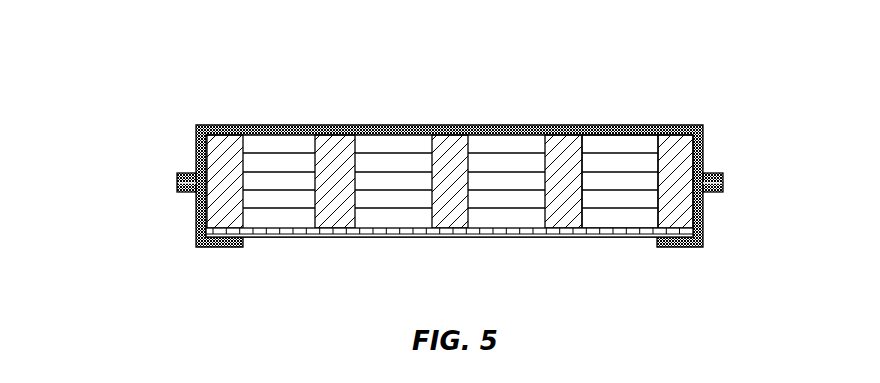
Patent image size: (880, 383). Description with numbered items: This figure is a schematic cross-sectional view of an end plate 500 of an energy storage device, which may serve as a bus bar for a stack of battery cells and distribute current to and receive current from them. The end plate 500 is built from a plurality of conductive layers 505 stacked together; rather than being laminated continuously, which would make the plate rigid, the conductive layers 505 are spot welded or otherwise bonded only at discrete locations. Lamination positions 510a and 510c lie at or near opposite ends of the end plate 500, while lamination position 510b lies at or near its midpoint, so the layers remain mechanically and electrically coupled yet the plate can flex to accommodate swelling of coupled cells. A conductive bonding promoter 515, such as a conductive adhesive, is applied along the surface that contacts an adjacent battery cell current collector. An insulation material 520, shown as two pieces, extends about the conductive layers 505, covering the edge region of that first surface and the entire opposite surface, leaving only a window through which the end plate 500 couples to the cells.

The end plate 500 is at (113, 90).
The conductive layers 505 is at (605, 153).
The lamination position 510a is at (248, 142).
The lamination position 510b is at (472, 142).
The lamination position 510c is at (704, 142).
The conductive bonding promoter 515 is at (574, 238).
The insulation material 520 is at (704, 240).